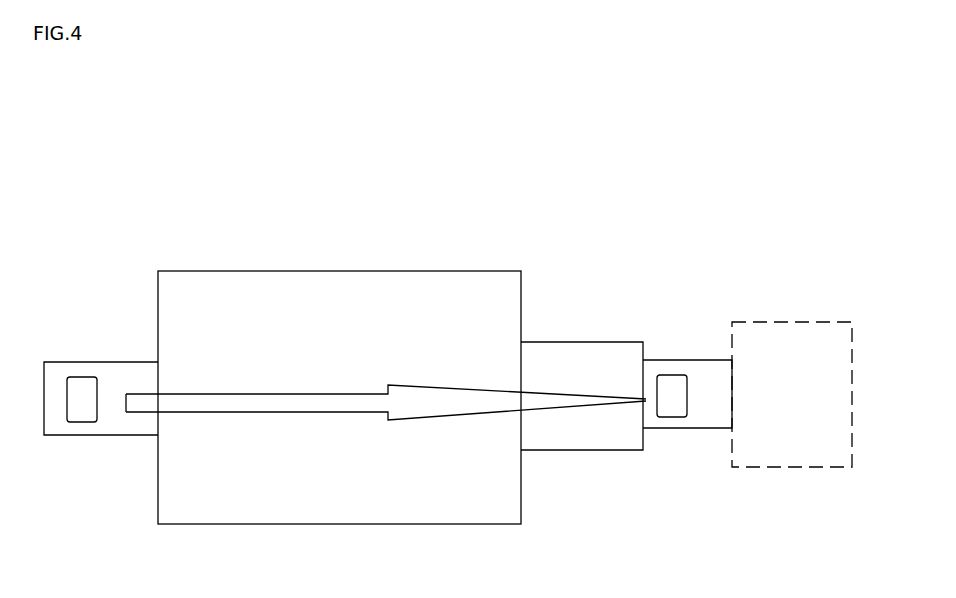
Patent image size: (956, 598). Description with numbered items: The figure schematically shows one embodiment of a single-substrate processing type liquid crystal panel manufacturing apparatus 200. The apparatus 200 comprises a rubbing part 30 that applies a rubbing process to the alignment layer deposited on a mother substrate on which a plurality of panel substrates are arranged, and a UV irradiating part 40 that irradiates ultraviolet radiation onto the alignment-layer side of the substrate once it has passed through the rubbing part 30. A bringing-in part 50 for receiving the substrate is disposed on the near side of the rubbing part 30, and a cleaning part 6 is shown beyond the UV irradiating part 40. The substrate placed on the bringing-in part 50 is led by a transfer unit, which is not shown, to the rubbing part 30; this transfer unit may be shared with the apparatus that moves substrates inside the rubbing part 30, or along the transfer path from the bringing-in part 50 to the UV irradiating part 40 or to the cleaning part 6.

The liquid crystal panel manufacturing apparatus 200 is at (598, 183).
The rubbing part 30 is at (355, 271).
The UV irradiating part 40 is at (600, 342).
The bringing-in part 50 is at (77, 440).
The cleaning part 6 is at (797, 468).